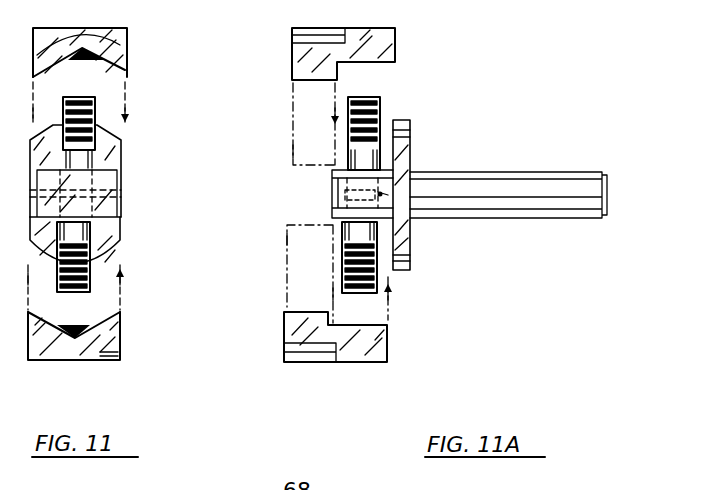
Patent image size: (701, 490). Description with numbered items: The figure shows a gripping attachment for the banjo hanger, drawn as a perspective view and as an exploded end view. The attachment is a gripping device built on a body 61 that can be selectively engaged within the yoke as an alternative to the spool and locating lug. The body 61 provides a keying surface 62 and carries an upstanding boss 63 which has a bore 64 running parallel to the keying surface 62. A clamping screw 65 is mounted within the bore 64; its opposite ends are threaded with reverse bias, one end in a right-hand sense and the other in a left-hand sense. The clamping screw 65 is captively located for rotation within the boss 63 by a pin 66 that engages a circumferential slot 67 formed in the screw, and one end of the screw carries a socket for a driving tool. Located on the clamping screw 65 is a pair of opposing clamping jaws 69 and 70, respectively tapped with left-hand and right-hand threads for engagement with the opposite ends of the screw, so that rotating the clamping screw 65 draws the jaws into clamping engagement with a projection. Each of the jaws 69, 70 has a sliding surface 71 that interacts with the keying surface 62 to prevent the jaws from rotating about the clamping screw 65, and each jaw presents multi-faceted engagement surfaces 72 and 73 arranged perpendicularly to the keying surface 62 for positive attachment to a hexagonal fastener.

In FIG. 11A, the body 61 is at (548, 205).
In FIG. 11, the keying surface 62 is at (104, 250).
In FIG. 11A, the keying surface 62 is at (395, 248).
In FIG. 11, the upstanding boss 63 is at (107, 180).
In FIG. 11A, the upstanding boss 63 is at (337, 182).
In FIG. 11, the bore 64 is at (125, 208).
In FIG. 11A, the bore 64 is at (420, 170).
In FIG. 11, the clamping screw 65 is at (93, 118).
In FIG. 11A, the clamping screw 65 is at (380, 105).
In FIG. 11, the pin 66 is at (125, 183).
In FIG. 11A, the pin 66 is at (388, 195).
In FIG. 11A, the circumferential slot 67 is at (333, 203).
In FIG. 11, the clamping jaw 69 is at (118, 58).
In FIG. 11A, the clamping jaw 69 is at (392, 37).
In FIG. 11, the clamping jaw 70 is at (110, 323).
In FIG. 11A, the clamping jaw 70 is at (385, 343).
In FIG. 11A, the sliding surface 71 is at (396, 60).
In FIG. 11, the multi-faceted engagement surface 72 is at (118, 74).
In FIG. 11, the multi-faceted engagement surface 73 is at (100, 322).